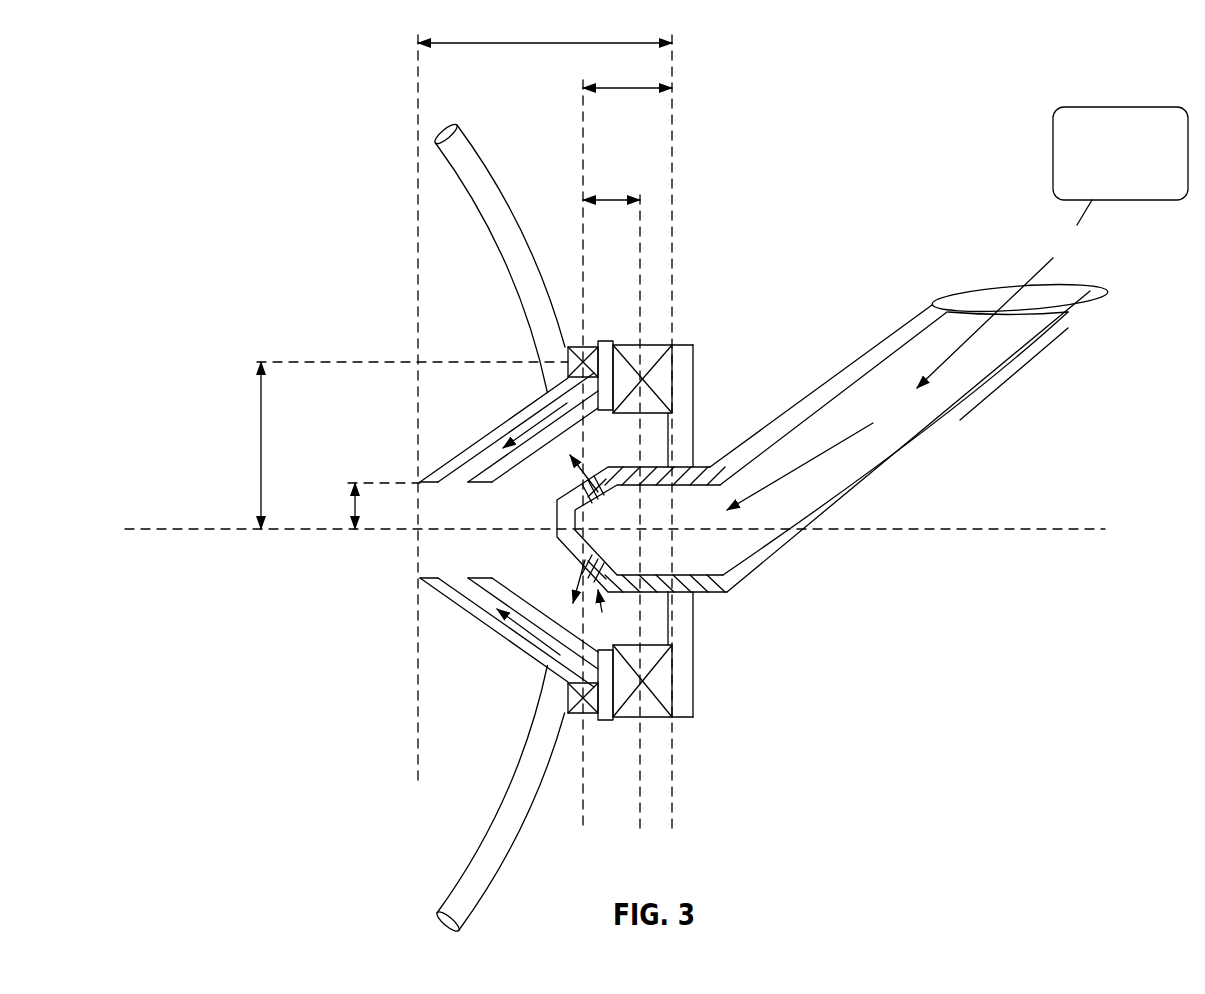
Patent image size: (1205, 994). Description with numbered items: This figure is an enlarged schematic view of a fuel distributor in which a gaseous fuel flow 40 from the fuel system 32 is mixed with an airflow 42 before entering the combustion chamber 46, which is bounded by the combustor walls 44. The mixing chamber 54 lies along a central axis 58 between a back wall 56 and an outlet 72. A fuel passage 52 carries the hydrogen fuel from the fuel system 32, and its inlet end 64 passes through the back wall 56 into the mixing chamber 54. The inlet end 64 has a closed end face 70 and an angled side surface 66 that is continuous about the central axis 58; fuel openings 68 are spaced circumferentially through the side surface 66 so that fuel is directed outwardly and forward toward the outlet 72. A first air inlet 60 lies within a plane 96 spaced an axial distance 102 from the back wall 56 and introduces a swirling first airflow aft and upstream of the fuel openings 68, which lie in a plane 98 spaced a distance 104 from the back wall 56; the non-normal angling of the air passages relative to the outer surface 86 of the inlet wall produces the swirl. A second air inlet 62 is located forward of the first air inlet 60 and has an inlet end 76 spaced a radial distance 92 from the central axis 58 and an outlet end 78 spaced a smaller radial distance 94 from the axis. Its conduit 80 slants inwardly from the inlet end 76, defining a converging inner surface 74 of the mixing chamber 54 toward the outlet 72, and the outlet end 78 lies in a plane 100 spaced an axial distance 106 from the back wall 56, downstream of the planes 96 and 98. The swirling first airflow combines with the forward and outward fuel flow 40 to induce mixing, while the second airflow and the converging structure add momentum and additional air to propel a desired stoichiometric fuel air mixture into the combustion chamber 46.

The plane 100 is at (240, 70).
The fuel system 32 is at (1135, 107).
The fuel flow 40 is at (606, 516).
The airflow 42 is at (594, 340).
The walls 44 is at (468, 160).
The combustion chamber 46 is at (359, 203).
The fuel passage 52 is at (980, 393).
The mixing chamber 54 is at (596, 459).
The back wall 56 is at (678, 615).
The central axis 58 is at (148, 529).
The first air inlet 60 is at (663, 677).
The second air inlet 62 is at (575, 697).
The inlet end 64 is at (697, 483).
The side surface 66 is at (548, 661).
The fuel openings 68 is at (567, 633).
The end face 70 is at (586, 640).
The outlet 72 is at (400, 540).
The inner surface 74 is at (522, 472).
The inlet end 76 is at (566, 358).
The outlet end 78 is at (472, 482).
The conduit 80 is at (487, 437).
The outer surface 86 is at (670, 724).
The distance 92 is at (258, 428).
The distance 94 is at (355, 505).
The plane 96 is at (698, 348).
The plane 98 is at (655, 383).
The distance 102 is at (676, 118).
The distance 104 is at (627, 73).
The distance 106 is at (545, 29).